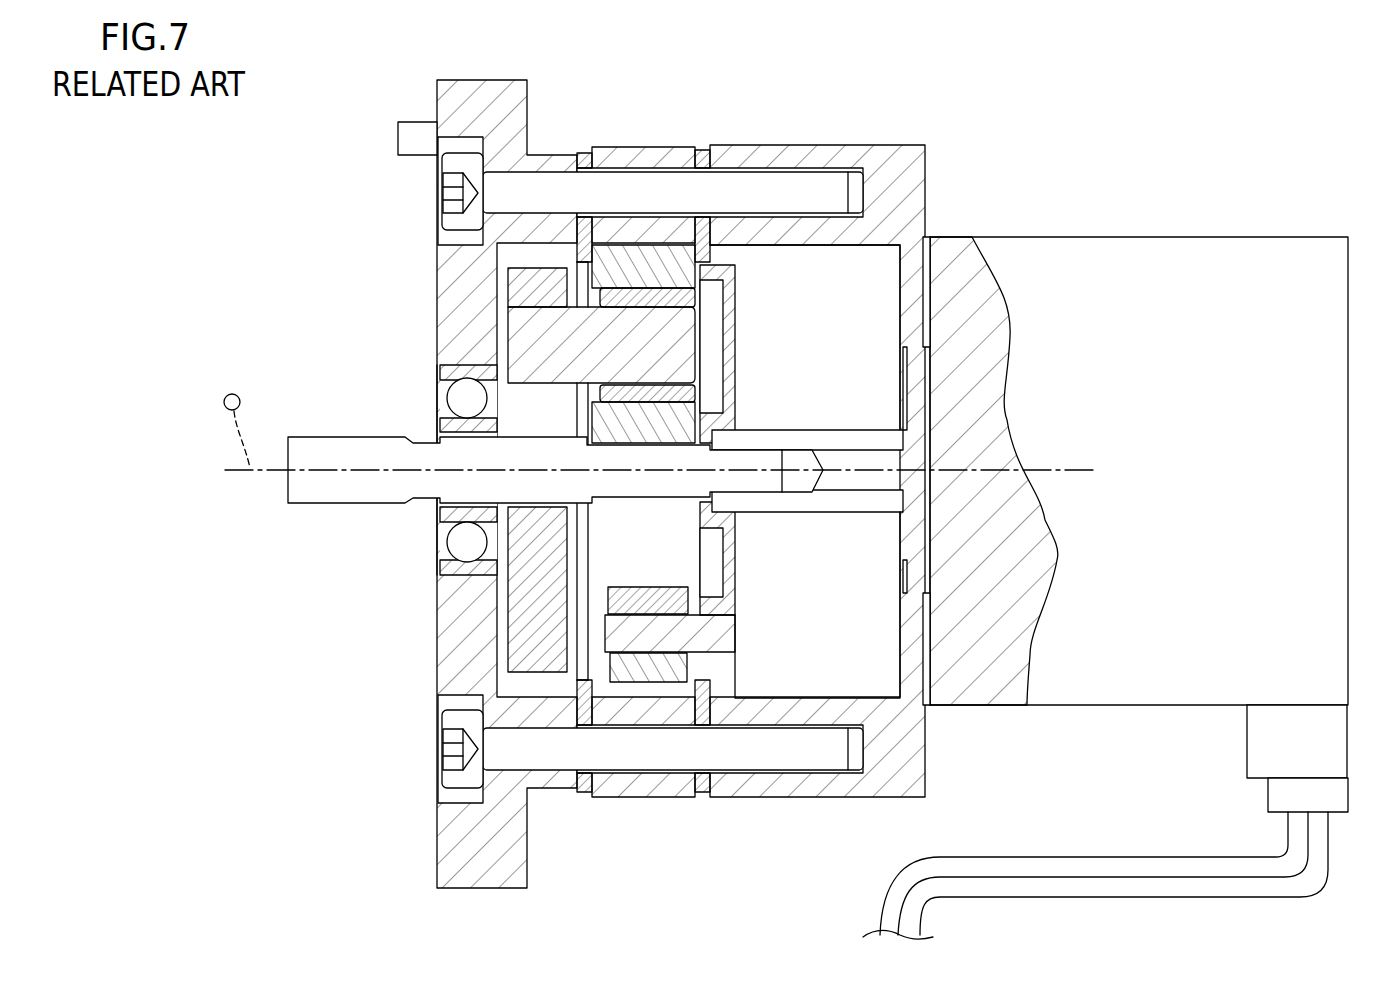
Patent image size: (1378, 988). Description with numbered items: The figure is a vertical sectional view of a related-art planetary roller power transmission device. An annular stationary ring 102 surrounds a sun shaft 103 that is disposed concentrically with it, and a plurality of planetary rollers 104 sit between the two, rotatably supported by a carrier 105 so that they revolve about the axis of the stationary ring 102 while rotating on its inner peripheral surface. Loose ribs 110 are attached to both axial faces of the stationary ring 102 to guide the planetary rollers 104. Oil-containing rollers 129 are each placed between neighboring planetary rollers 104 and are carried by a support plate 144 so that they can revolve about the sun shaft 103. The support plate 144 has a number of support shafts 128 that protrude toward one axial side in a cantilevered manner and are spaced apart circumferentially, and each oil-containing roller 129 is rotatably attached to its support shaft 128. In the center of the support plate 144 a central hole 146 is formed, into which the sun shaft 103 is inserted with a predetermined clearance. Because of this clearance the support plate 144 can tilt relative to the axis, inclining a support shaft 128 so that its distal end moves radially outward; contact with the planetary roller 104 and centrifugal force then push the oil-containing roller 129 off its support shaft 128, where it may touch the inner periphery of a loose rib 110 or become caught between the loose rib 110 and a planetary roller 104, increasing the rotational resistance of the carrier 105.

The stationary ring 102 is at (627, 145).
The sun shaft 103 is at (667, 487).
The planetary roller 104 is at (661, 255).
The carrier 105 is at (522, 642).
The loose rib 110 is at (578, 153).
The support shaft 128 is at (667, 637).
The oil-containing roller 129 is at (620, 670).
The support plate 144 is at (757, 308).
The central hole 146 is at (706, 480).